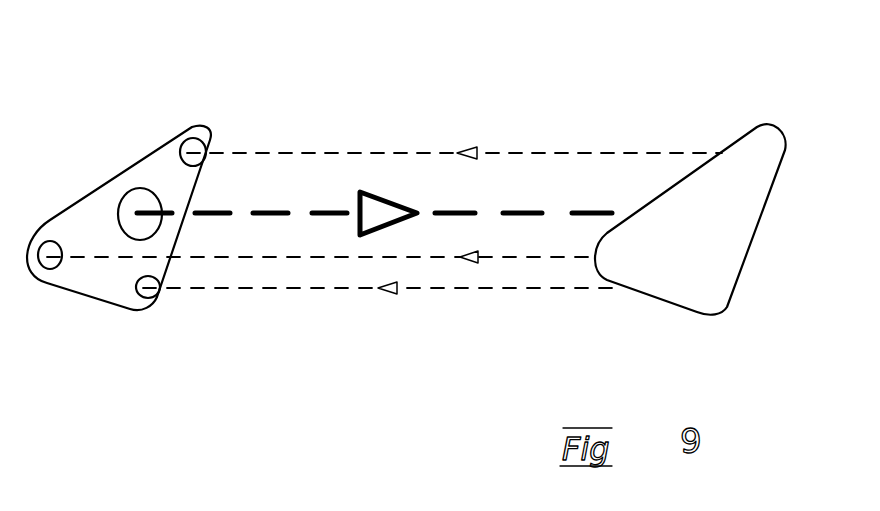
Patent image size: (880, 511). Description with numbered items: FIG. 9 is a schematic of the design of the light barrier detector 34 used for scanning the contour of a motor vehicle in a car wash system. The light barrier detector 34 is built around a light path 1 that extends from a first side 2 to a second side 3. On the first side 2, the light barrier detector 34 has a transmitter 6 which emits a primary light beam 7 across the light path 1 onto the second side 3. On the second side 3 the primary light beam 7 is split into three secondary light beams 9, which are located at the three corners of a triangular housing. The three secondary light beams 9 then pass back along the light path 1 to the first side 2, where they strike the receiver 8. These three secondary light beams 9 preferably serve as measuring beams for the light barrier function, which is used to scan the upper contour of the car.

The light path 1 is at (412, 130).
The first side 2 is at (95, 146).
The second side 3 is at (743, 114).
The transmitter 6 is at (140, 202).
The primary light beam 7 is at (272, 212).
The receiver 8 is at (190, 150).
The secondary light beams 9 is at (593, 153).
The light barrier detector 34 is at (625, 94).